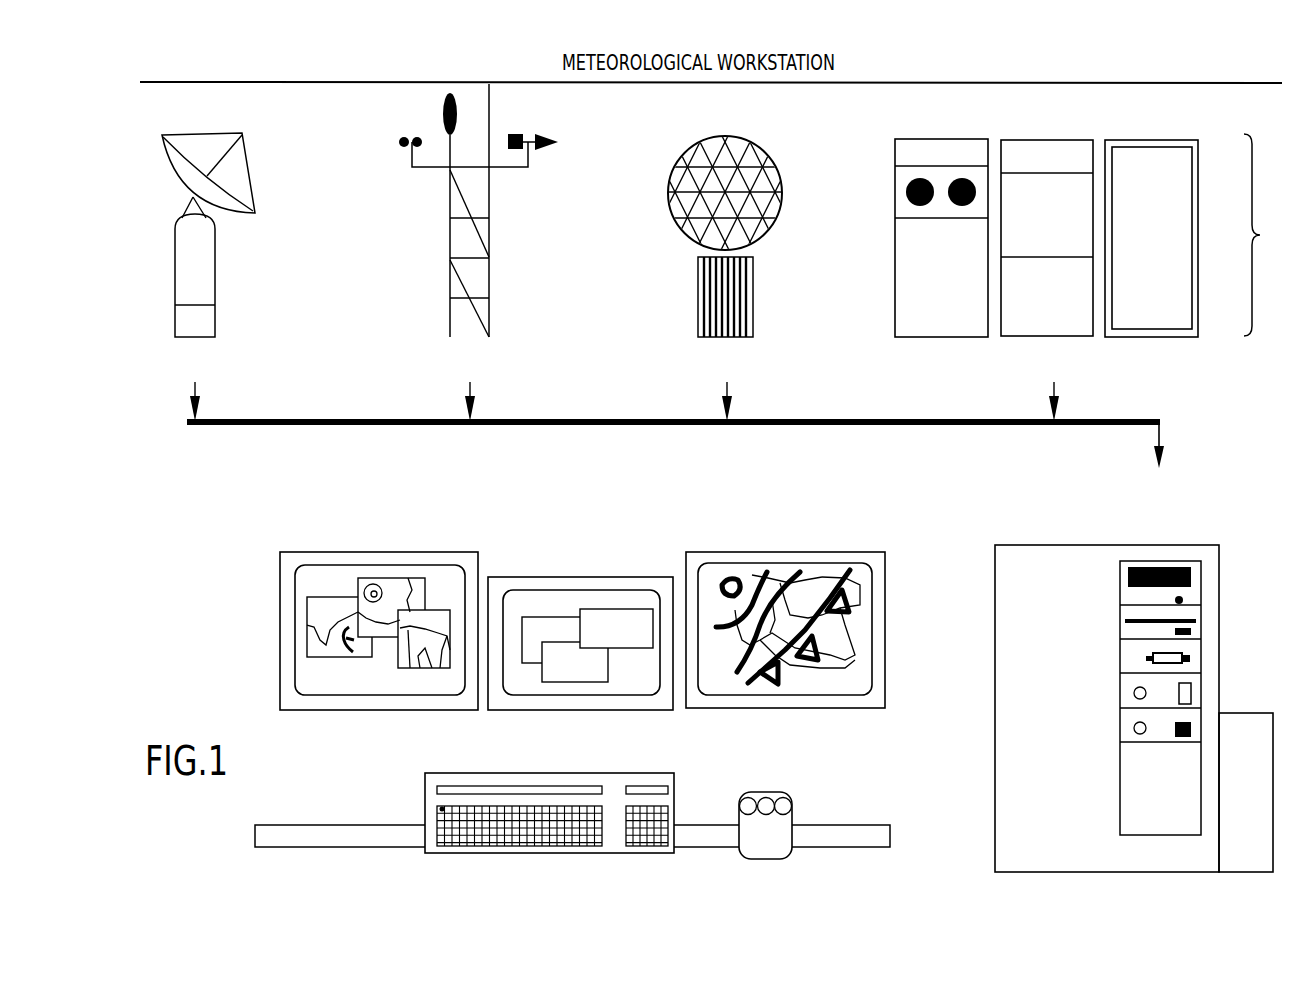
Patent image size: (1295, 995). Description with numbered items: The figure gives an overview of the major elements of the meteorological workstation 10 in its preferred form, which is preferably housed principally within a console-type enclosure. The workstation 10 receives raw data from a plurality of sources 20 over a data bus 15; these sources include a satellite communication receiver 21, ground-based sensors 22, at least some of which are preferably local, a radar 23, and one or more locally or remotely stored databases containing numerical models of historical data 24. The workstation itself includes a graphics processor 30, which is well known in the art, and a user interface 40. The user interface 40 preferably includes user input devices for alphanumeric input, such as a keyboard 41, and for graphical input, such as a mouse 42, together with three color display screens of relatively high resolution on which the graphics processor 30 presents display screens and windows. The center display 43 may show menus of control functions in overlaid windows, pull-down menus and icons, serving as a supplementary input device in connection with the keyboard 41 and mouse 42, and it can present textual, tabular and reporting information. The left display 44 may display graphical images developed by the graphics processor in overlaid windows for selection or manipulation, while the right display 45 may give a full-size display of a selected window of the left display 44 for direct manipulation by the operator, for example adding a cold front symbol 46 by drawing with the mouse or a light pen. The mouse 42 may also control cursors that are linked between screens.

The meteorological workstation 10 is at (1245, 418).
The data bus 15 is at (1141, 418).
The plurality of sources 20 is at (1269, 235).
The satellite communication receiver 21 is at (204, 277).
The ground-based sensors 22 is at (478, 252).
The radar 23 is at (725, 268).
The numerical models of historical data 24 is at (1046, 280).
The graphics processor 30 is at (1219, 589).
The user interface 40 is at (572, 648).
The keyboard 41 is at (555, 854).
The mouse 42 is at (752, 860).
The center display 43 is at (585, 577).
The left display 44 is at (477, 553).
The right display 45 is at (843, 551).
The cold front symbol 46 is at (852, 578).